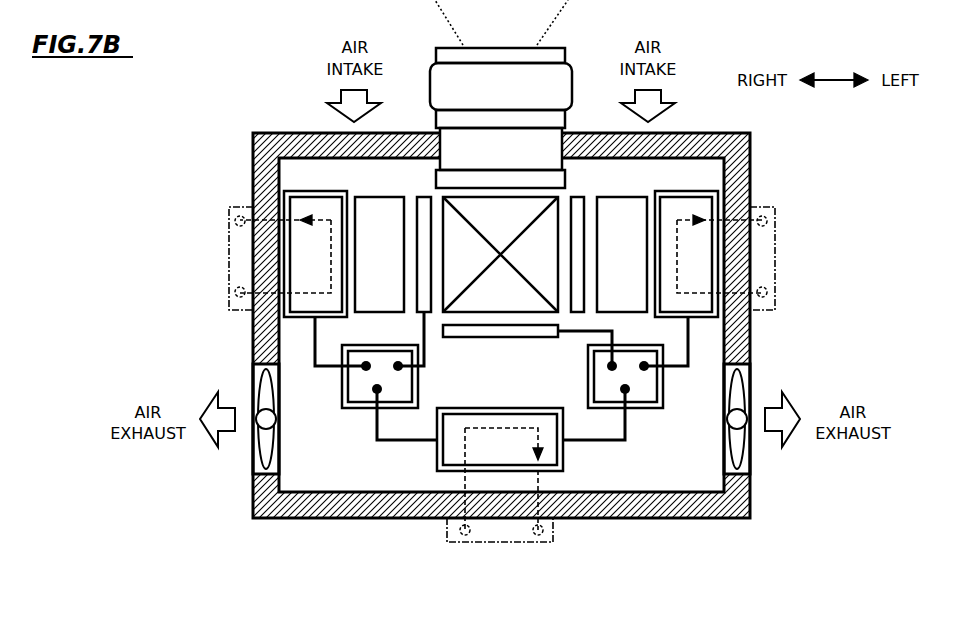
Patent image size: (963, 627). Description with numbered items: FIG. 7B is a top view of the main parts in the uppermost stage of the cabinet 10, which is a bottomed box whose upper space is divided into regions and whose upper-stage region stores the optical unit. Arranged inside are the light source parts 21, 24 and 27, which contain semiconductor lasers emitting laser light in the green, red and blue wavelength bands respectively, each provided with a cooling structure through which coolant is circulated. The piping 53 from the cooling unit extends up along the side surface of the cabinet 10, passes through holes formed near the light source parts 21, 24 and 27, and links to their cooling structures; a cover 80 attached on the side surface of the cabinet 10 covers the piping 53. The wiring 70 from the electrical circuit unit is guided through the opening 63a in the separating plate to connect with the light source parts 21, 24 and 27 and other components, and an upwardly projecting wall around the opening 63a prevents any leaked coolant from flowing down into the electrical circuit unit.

The cabinet 10 is at (253, 134).
The light source part 24 is at (306, 208).
The light source part 27 is at (692, 208).
The light source part 21 is at (548, 448).
The opening 63a is at (355, 400).
The wiring 70 is at (424, 336).
The cover 80 is at (229, 236).
The piping 53 is at (240, 210).